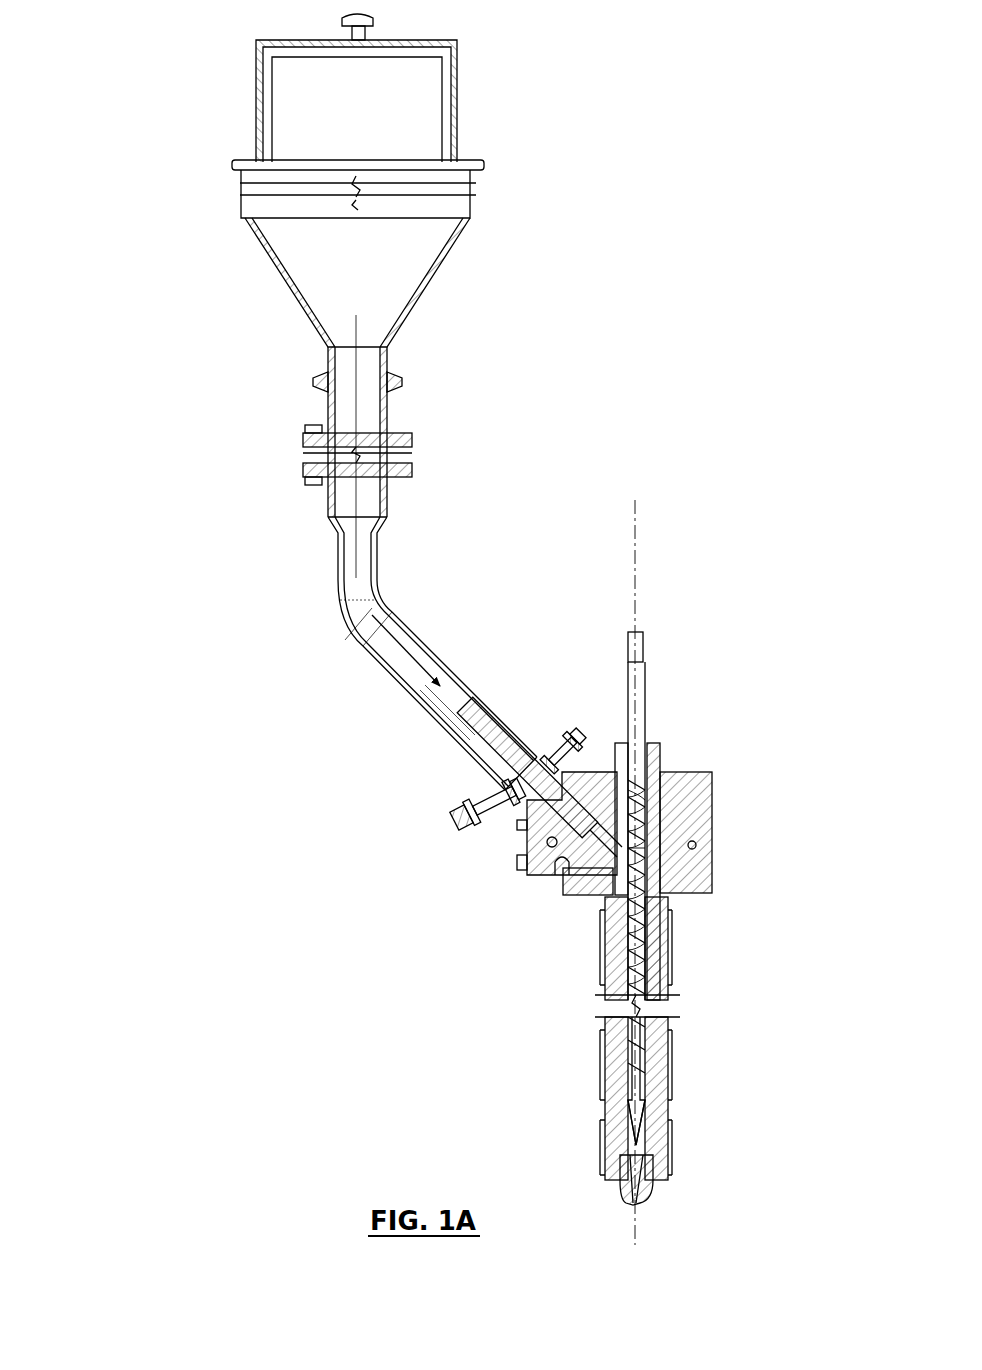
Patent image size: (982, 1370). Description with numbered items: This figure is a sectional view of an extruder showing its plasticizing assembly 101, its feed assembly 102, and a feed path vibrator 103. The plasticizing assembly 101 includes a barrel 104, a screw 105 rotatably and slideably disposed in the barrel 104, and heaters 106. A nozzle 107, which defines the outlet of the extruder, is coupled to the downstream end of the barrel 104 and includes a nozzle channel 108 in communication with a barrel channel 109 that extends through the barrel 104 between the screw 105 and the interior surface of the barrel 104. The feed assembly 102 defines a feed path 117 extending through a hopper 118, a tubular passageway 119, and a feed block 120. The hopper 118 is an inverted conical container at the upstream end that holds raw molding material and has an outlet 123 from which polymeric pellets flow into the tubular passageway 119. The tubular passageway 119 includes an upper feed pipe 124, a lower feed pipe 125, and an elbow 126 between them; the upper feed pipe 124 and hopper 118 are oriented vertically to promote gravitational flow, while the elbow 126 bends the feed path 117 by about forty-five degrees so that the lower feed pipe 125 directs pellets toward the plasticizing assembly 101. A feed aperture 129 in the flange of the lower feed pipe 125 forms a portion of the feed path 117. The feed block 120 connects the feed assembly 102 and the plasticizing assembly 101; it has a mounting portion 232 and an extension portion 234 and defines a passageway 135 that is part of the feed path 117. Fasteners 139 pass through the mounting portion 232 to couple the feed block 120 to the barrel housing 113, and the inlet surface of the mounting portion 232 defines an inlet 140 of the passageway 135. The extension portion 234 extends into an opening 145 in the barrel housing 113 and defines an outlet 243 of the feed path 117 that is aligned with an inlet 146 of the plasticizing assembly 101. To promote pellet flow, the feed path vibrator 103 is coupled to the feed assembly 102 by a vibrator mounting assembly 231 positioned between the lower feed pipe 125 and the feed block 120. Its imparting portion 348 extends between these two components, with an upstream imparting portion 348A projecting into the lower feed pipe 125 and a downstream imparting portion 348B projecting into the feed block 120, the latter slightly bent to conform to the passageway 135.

The plasticizing assembly 101 is at (485, 990).
The feed assembly 102 is at (190, 521).
The feed path vibrator 103 is at (444, 714).
The barrel 104 is at (653, 940).
The screw 105 is at (653, 963).
The heaters 106 is at (673, 1035).
The nozzle 107 is at (655, 1190).
The nozzle channel 108 is at (633, 1168).
The barrel channel 109 is at (633, 1147).
The barrel housing 113 is at (695, 868).
The feed path 117 is at (348, 607).
The hopper 118 is at (452, 250).
The tubular passageway 119 is at (513, 462).
The feed block 120 is at (535, 878).
The outlet 123 is at (368, 342).
The upper feed pipe 124 is at (388, 495).
The lower feed pipe 125 is at (418, 632).
The elbow 126 is at (377, 578).
The feed aperture 129 is at (505, 758).
The passageway 135 is at (643, 817).
The fastener 139 is at (520, 865).
The inlet 140 is at (572, 780).
The opening 145 is at (560, 860).
The inlet 146 is at (640, 853).
The vibrator mounting assembly 231 is at (534, 728).
The mounting portion 232 is at (537, 828).
The extension portion 234 is at (645, 797).
The outlet 243 is at (597, 900).
The imparting portion 348 is at (497, 603).
The upstream imparting portion 348A is at (510, 760).
The downstream imparting portion 348B is at (628, 775).